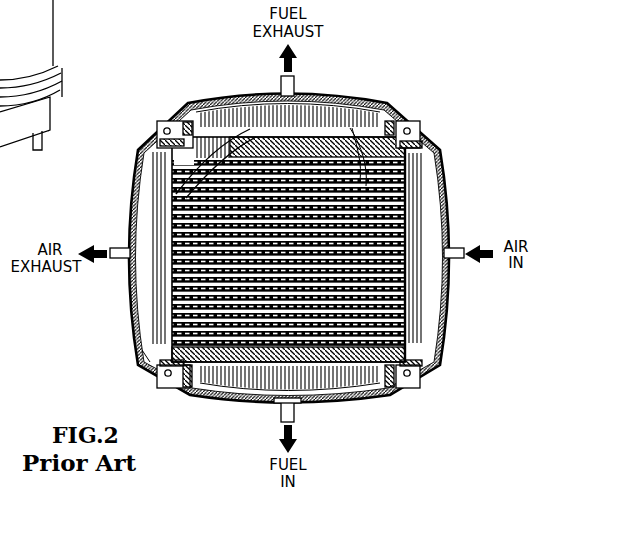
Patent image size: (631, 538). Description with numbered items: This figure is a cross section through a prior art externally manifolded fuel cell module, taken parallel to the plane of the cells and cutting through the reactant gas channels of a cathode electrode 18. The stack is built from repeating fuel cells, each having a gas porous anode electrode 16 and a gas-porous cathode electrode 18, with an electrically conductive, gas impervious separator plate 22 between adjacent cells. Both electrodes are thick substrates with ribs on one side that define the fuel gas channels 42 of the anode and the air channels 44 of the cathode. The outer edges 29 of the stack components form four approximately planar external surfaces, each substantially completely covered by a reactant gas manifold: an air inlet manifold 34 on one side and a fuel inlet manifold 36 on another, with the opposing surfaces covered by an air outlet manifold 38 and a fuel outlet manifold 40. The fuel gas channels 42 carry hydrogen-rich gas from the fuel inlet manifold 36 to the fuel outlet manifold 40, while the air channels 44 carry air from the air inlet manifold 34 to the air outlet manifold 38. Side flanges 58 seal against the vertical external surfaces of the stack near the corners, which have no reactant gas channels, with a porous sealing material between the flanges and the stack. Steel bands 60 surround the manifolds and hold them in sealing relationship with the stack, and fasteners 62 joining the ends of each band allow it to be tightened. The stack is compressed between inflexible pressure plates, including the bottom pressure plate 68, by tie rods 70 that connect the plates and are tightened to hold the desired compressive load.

The anode electrode 16 is at (194, 165).
The cathode electrode 18 is at (176, 328).
The separator plate 22 is at (176, 194).
The outer edges 29 is at (283, 137).
The air inlet manifold 34 is at (434, 268).
The fuel inlet manifold 36 is at (280, 398).
The air outlet manifold 38 is at (136, 348).
The fuel outlet manifold 40 is at (338, 103).
The fuel gas channels 42 is at (217, 130).
The air channels 44 is at (347, 152).
The side flanges 58 is at (389, 126).
The steel bands 60 is at (150, 367).
The fasteners 62 is at (280, 414).
The bottom pressure plate 68 is at (417, 378).
The tie rods 70 is at (410, 130).